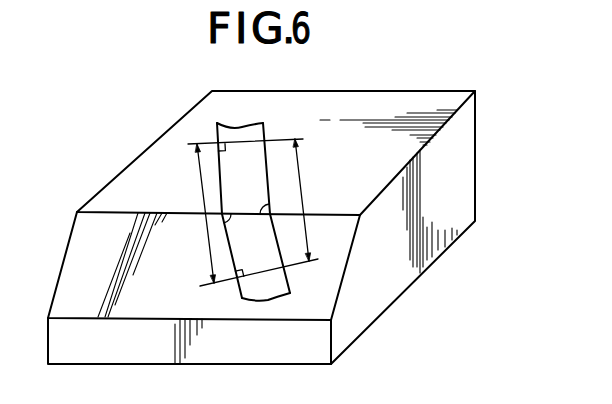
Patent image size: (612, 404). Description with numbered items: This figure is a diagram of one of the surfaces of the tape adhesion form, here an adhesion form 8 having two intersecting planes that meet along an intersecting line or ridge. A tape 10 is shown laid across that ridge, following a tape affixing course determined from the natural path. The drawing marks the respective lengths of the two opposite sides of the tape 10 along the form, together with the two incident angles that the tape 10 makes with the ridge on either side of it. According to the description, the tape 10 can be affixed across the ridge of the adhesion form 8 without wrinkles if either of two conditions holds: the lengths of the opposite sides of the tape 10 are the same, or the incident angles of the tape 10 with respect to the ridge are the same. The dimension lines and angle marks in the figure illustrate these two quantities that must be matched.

The substrate block 8 is at (392, 282).
The tape 10 is at (253, 134).